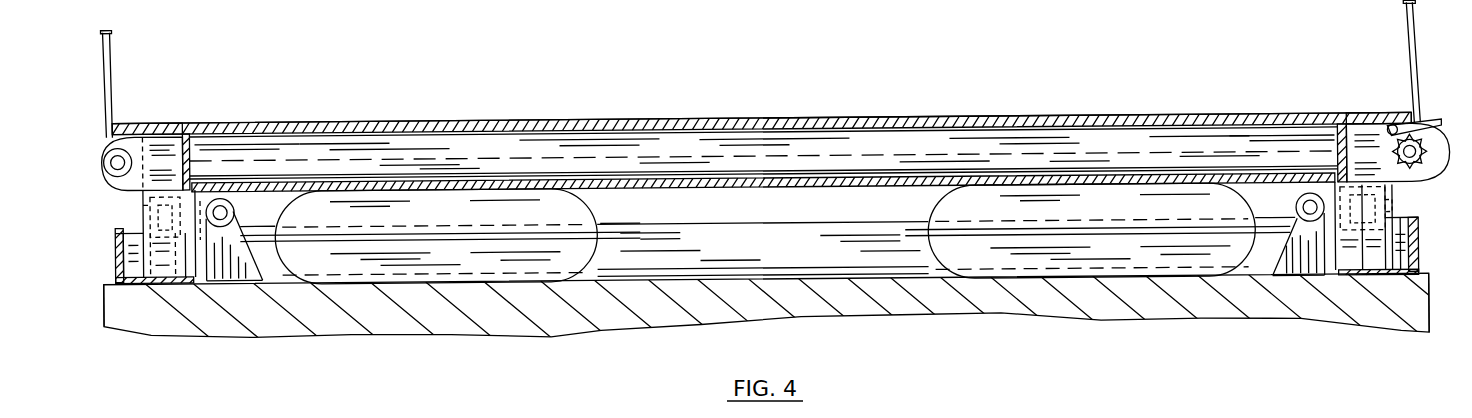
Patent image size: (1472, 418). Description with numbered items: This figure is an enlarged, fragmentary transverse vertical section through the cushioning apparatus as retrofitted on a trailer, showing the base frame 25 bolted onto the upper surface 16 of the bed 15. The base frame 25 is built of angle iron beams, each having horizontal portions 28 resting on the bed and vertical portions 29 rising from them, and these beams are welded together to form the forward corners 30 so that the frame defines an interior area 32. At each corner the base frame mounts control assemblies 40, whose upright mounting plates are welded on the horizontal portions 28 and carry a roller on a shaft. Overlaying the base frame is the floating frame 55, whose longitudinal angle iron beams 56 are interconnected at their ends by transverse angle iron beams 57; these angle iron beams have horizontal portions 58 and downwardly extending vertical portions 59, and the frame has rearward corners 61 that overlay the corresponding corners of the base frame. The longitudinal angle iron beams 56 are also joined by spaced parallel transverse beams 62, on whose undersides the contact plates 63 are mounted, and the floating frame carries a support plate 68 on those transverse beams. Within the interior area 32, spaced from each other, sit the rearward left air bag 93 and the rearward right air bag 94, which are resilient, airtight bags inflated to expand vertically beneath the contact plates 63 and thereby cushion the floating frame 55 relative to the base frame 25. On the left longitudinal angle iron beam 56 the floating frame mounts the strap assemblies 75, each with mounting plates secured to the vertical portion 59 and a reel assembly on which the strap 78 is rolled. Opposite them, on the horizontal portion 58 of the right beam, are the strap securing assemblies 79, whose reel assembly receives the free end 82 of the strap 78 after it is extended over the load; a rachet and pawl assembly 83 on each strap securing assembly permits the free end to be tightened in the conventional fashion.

The bed 15 is at (1413, 309).
The upper surface 16 is at (817, 282).
The base frame 25 is at (115, 257).
The horizontal portions 28 is at (175, 328).
The vertical portions 29 is at (115, 227).
The forward corners 30 is at (112, 266).
The interior area 32 is at (775, 242).
The control assemblies 40 is at (238, 206).
The floating frame 55 is at (459, 114).
The longitudinal angle iron beams 56 is at (140, 118).
The transverse angle iron beams 57 is at (384, 118).
The horizontal portions 58 is at (186, 129).
The vertical portions 59 is at (218, 136).
The rearward corners 61 is at (118, 185).
The transverse beams 62 is at (623, 133).
The contact plates 63 is at (690, 183).
The support plate 68 is at (888, 118).
The strap assemblies 75 is at (103, 132).
The strap 78 is at (113, 53).
The strap securing assemblies 79 is at (1440, 140).
The free end 82 is at (1408, 32).
The rachet and pawl assembly 83 is at (1417, 102).
The rearward left air bag 93 is at (422, 255).
The rearward right air bag 94 is at (1048, 254).